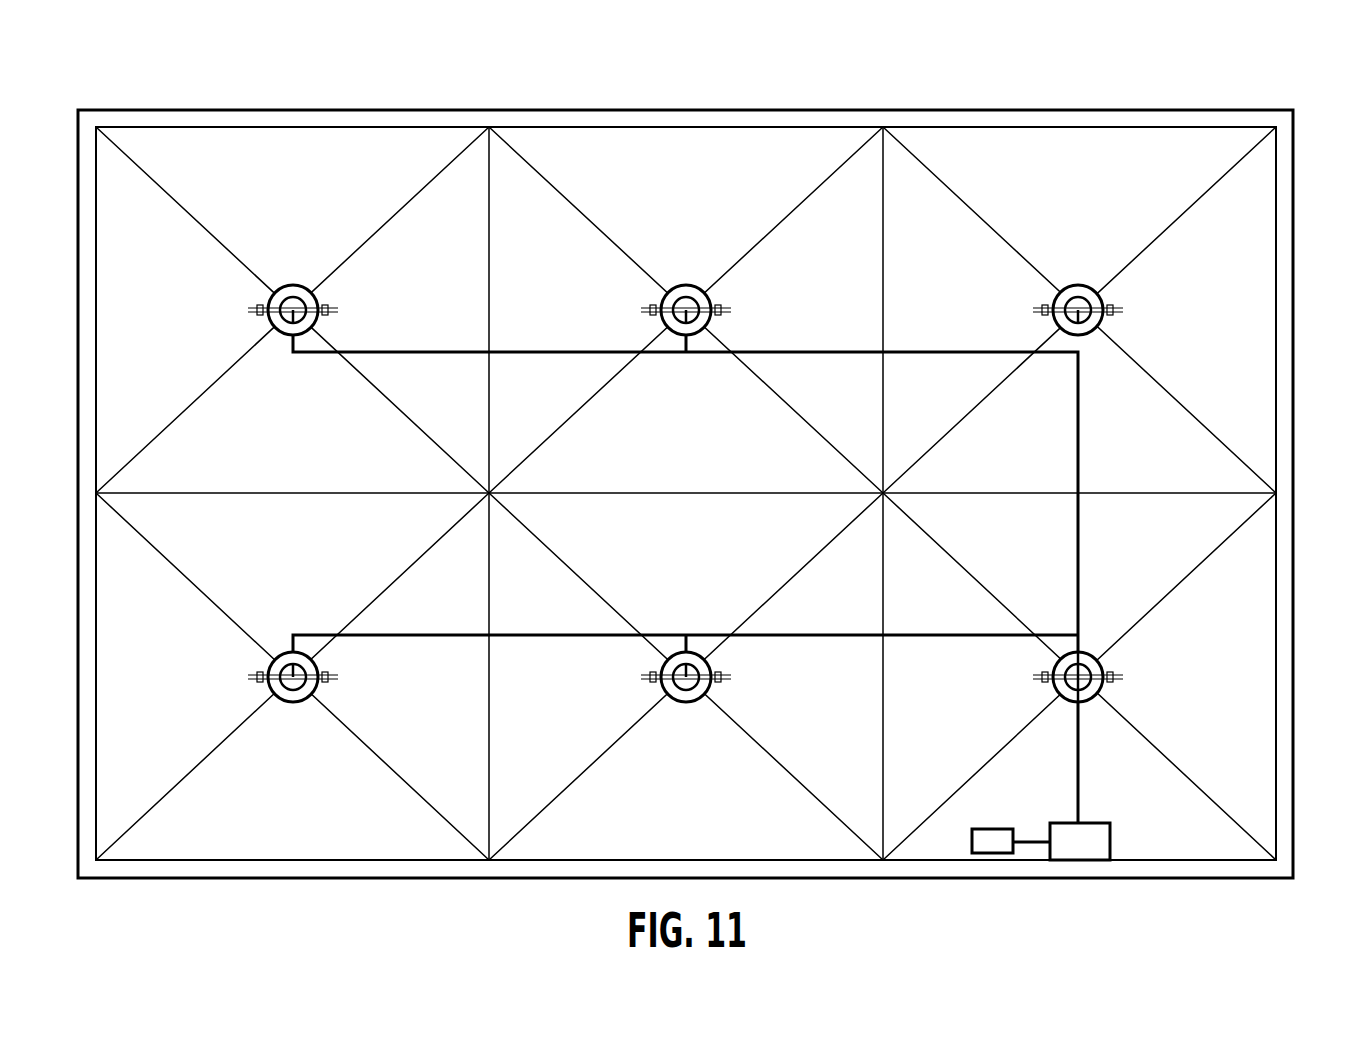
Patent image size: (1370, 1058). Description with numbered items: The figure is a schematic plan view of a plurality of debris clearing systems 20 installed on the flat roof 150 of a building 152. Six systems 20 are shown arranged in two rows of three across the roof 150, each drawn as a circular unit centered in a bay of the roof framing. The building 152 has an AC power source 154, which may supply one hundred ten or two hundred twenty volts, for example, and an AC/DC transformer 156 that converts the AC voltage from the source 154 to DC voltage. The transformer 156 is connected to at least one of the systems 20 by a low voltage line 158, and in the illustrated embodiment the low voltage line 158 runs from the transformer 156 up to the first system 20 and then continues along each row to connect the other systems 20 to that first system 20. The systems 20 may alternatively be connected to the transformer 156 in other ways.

The debris clearing system 20 is at (295, 298).
The flat roof 150 is at (1247, 292).
The building 152 is at (1300, 84).
The AC power source 154 is at (1000, 829).
The AC/DC transformer 156 is at (1086, 828).
The low voltage line 158 is at (807, 350).